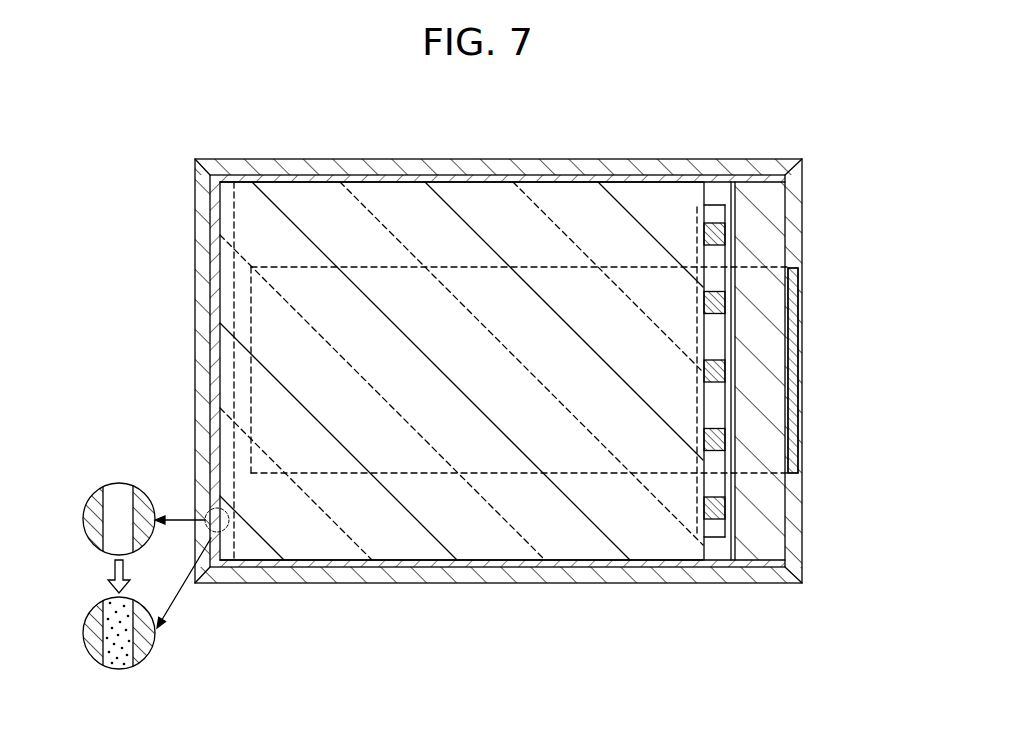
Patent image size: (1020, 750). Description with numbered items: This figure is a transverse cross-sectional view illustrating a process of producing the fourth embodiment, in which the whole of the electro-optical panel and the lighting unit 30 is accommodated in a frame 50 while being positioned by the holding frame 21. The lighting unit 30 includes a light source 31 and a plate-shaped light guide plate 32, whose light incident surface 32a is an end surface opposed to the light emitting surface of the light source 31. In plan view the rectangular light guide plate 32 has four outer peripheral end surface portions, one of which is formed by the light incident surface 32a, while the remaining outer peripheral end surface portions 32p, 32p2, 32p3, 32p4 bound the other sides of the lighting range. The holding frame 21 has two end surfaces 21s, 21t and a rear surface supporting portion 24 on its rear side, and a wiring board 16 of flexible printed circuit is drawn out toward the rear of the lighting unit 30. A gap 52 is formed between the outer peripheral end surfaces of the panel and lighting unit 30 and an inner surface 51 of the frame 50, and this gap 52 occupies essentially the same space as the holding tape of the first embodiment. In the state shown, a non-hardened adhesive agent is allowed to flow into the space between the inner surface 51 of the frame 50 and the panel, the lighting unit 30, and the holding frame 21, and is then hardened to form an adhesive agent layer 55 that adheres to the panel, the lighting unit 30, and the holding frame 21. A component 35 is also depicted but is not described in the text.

The wiring board 16 is at (795, 413).
The holding frame 21 is at (785, 225).
The end surface of the holding frame 21s is at (767, 167).
The end surface of the holding frame 21t is at (755, 567).
The rear surface supporting portion 24 is at (238, 392).
The lighting unit 30 is at (668, 165).
The light source 31 is at (715, 357).
The light guide plate 32 is at (395, 210).
The light incident surface 32a is at (703, 279).
The outer peripheral end surface portion 32p is at (523, 175).
The outer peripheral end surface portion 32p2 is at (265, 178).
The outer peripheral end surface portion 32p3 is at (215, 285).
The outer peripheral end surface portion 32p4 is at (375, 563).
The connection member 35 is at (715, 205).
The frame 50 is at (620, 168).
The inner surface of the frame 51 is at (108, 532).
The gap 52 is at (112, 497).
The adhesive agent layer 55 is at (215, 357).